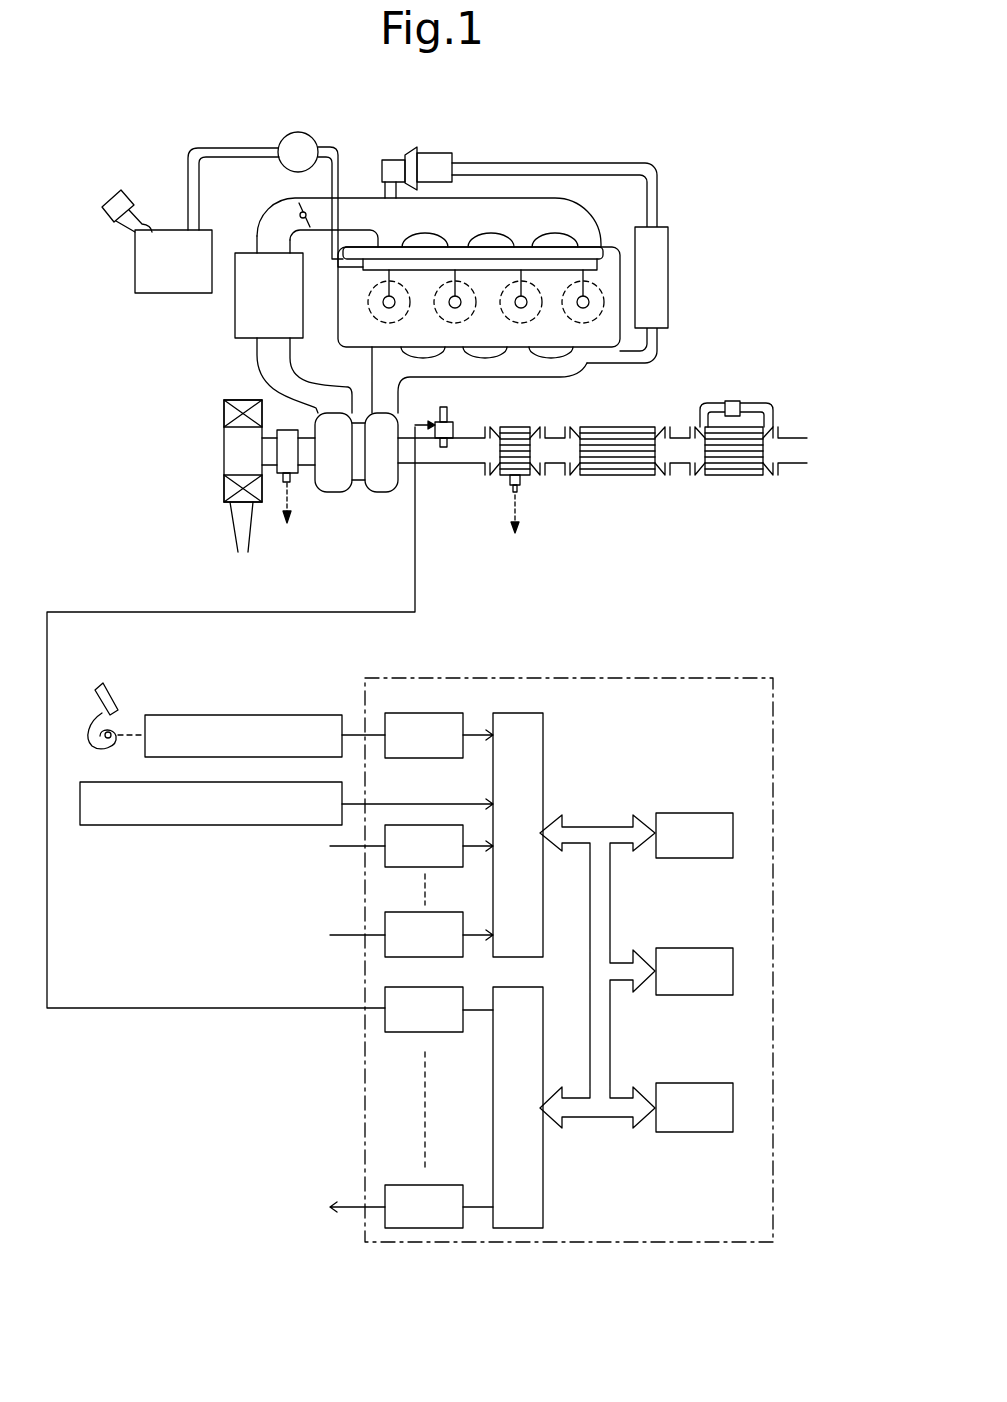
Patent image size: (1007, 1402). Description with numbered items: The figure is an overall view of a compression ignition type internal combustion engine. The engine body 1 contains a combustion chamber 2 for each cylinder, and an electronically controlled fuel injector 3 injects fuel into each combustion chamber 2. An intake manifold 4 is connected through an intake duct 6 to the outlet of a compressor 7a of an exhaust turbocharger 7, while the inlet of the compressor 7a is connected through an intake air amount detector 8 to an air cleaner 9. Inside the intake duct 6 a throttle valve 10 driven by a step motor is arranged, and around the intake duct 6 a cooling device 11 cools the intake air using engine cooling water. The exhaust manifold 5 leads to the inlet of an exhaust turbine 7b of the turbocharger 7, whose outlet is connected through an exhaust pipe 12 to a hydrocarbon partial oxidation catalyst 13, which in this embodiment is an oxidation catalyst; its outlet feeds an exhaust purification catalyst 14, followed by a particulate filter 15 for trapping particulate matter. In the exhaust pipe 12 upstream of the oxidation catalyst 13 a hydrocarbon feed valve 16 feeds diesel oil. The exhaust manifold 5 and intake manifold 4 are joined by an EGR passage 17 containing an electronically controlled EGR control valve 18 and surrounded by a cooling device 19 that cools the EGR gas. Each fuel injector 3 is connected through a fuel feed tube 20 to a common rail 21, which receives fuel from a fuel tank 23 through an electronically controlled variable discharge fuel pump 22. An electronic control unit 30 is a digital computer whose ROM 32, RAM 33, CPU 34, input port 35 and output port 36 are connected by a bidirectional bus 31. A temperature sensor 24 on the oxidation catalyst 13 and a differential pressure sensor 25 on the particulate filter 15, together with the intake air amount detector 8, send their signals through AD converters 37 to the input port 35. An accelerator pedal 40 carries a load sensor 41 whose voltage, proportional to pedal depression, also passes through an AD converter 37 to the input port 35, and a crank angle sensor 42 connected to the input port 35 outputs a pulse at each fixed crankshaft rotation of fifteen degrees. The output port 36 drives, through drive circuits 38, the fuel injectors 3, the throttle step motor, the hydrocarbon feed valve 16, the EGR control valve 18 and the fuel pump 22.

The engine body 1 is at (624, 233).
The combustion chamber 2 is at (381, 323).
The fuel injector 3 is at (383, 304).
The intake manifold 4 is at (567, 210).
The exhaust manifold 5 is at (478, 373).
The intake duct 6 is at (263, 235).
The exhaust turbocharger 7 is at (357, 502).
The compressor 7a is at (333, 483).
The exhaust turbine 7b is at (387, 483).
The intake air amount detector 8 is at (297, 482).
The air cleaner 9 is at (235, 455).
The throttle valve 10 is at (299, 206).
The cooling device 11 is at (240, 320).
The exhaust pipe 12 is at (440, 466).
The hydrocarbon partial oxidation catalyst 13 is at (507, 480).
The exhaust purification catalyst 14 is at (618, 473).
The particulate filter 15 is at (735, 473).
The hydrocarbon feed valve 16 is at (442, 420).
The EGR passage 17 is at (539, 168).
The EGR control valve 18 is at (393, 160).
The cooling device 19 is at (668, 275).
The fuel feed tube 20 is at (386, 281).
The common rail 21 is at (492, 258).
The fuel pump 22 is at (287, 136).
The fuel tank 23 is at (150, 290).
The temperature sensor 24 is at (519, 490).
The differential pressure sensor 25 is at (733, 401).
The electronic control unit 30 is at (782, 705).
The bidirectional bus 31 is at (594, 827).
The ROM 32 is at (689, 813).
The RAM 33 is at (693, 948).
The CPU 34 is at (693, 1083).
The input port 35 is at (525, 713).
The output port 36 is at (545, 1172).
The AD converter 37 is at (430, 713).
The drive circuit 38 is at (385, 1198).
The accelerator pedal 40 is at (113, 690).
The load sensor 41 is at (279, 713).
The crank angle sensor 42 is at (207, 826).